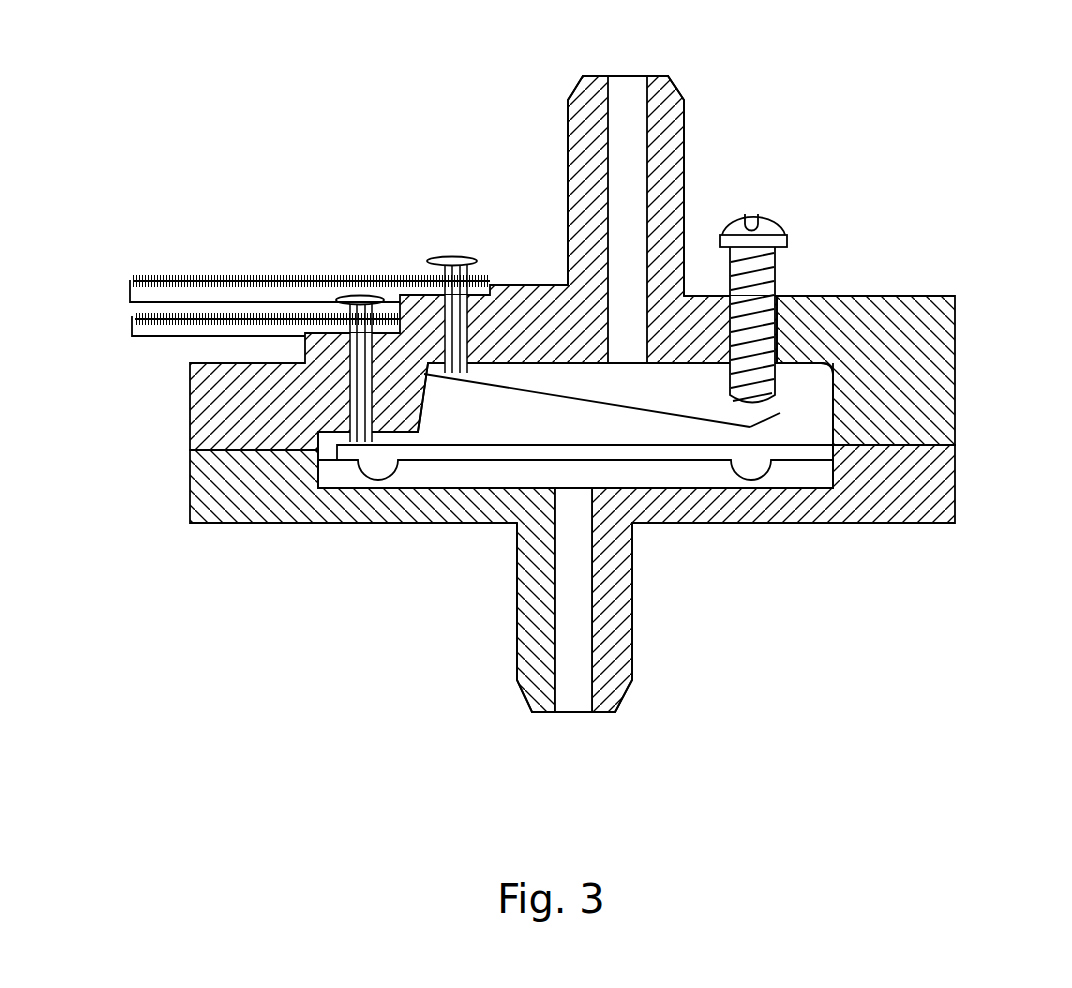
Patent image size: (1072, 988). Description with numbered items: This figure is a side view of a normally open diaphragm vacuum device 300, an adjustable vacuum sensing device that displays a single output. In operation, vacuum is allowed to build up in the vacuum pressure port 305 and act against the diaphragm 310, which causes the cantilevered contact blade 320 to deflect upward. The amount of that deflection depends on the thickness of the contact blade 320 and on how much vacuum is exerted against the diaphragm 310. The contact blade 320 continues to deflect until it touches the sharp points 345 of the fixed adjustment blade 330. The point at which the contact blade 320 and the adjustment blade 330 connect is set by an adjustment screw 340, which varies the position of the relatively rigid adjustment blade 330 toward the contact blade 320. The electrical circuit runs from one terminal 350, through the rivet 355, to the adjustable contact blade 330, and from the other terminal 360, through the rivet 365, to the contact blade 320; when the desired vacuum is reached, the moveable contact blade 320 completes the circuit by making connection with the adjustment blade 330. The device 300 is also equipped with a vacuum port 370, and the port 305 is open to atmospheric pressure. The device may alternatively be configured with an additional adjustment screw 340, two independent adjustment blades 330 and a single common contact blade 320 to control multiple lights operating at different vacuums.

The normally open diaphragm vacuum device 300 is at (884, 222).
The vacuum pressure port 305 is at (575, 682).
The diaphragm 310 is at (418, 460).
The contact blade 320 is at (790, 447).
The adjustment blade 330 is at (528, 374).
The adjustment screw 340 is at (770, 214).
The sharp points 345 is at (760, 422).
The terminal 350 is at (130, 292).
The rivet 355 is at (450, 257).
The terminal 360 is at (132, 328).
The rivet 365 is at (358, 296).
The vacuum port 370 is at (627, 75).